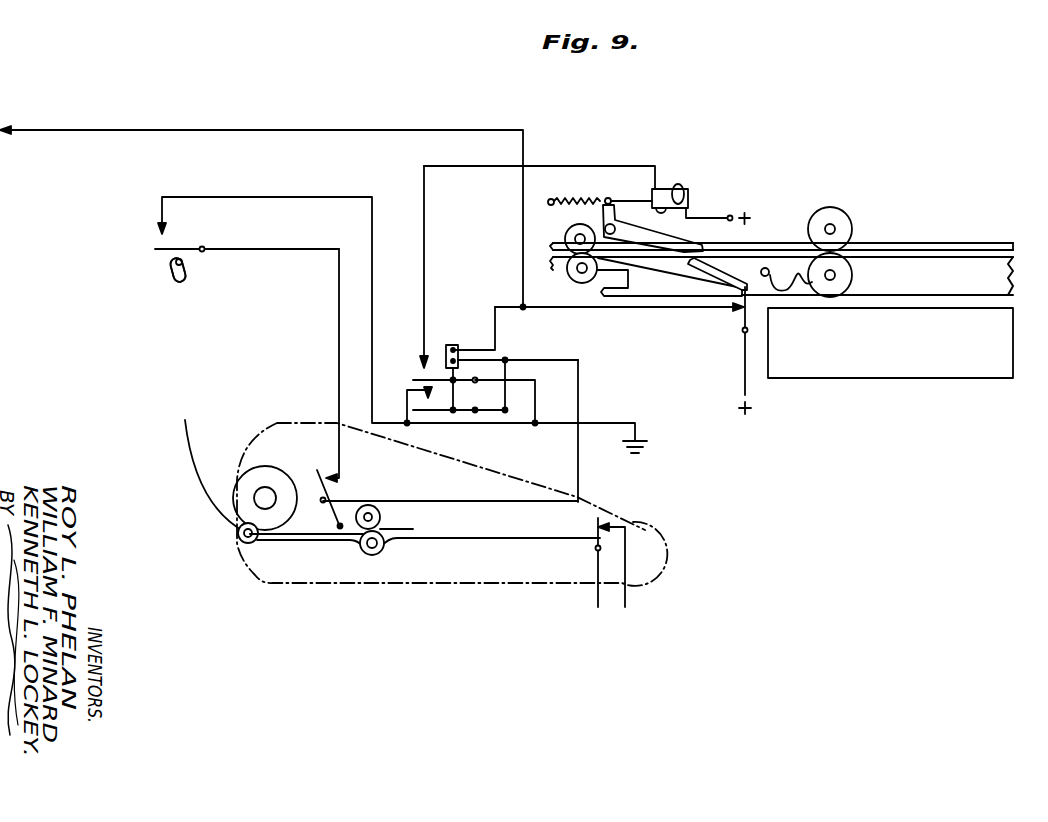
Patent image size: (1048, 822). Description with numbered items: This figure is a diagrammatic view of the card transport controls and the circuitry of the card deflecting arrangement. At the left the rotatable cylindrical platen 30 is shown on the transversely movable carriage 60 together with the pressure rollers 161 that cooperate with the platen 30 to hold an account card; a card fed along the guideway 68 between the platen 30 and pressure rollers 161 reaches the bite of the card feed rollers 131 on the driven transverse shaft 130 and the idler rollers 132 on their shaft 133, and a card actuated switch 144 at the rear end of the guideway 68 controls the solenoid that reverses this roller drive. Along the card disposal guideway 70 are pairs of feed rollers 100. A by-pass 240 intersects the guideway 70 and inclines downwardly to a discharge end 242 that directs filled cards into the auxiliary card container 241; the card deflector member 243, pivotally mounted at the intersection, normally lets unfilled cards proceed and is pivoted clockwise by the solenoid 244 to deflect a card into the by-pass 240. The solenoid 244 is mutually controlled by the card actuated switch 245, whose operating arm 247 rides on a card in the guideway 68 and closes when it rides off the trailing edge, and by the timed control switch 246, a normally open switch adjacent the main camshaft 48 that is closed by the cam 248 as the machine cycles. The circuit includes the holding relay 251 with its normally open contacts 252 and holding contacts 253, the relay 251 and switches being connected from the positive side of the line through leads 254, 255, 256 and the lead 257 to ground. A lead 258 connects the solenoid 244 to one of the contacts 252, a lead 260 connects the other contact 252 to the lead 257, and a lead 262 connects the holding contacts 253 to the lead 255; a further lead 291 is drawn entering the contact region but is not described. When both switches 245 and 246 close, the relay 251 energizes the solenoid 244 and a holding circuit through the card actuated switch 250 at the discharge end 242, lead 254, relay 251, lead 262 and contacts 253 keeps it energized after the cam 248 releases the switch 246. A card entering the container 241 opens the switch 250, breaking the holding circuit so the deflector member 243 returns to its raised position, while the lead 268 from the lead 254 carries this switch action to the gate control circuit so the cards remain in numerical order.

The lead 268 is at (300, 130).
The lead 258 is at (473, 166).
The lead 257 is at (373, 242).
The timed control switch 246 is at (183, 249).
The lead 256 is at (339, 328).
The main camshaft 48 is at (190, 263).
The cam 248 is at (186, 278).
The holding relay 251 is at (452, 336).
The normally open contacts 252 is at (457, 383).
The lead 260 is at (537, 416).
The lead 262 is at (507, 364).
The lead 255 is at (580, 476).
The control input line 291 is at (405, 390).
The holding contacts 253 is at (462, 413).
The solenoid 244 is at (668, 189).
The card deflector member 243 is at (656, 235).
The card feed rollers 100 is at (572, 232).
The card disposal guideway 70 is at (905, 241).
The lead 254 is at (600, 298).
The by-pass 240 is at (713, 288).
The discharge end 242 is at (750, 273).
The card actuated switch 250 is at (748, 315).
The auxiliary card container 241 is at (922, 354).
The platen 30 is at (267, 468).
The pressure rollers 161 is at (240, 548).
The guideway 68 is at (440, 539).
The card actuated switch 245 is at (316, 473).
The operating arm 247 is at (337, 500).
The driven transverse shaft 130 is at (381, 511).
The card feed rollers 131 is at (413, 529).
The shaft 133 is at (382, 551).
The idler rollers 132 is at (366, 553).
The carriage 60 is at (470, 588).
The card actuated switch 144 is at (602, 520).